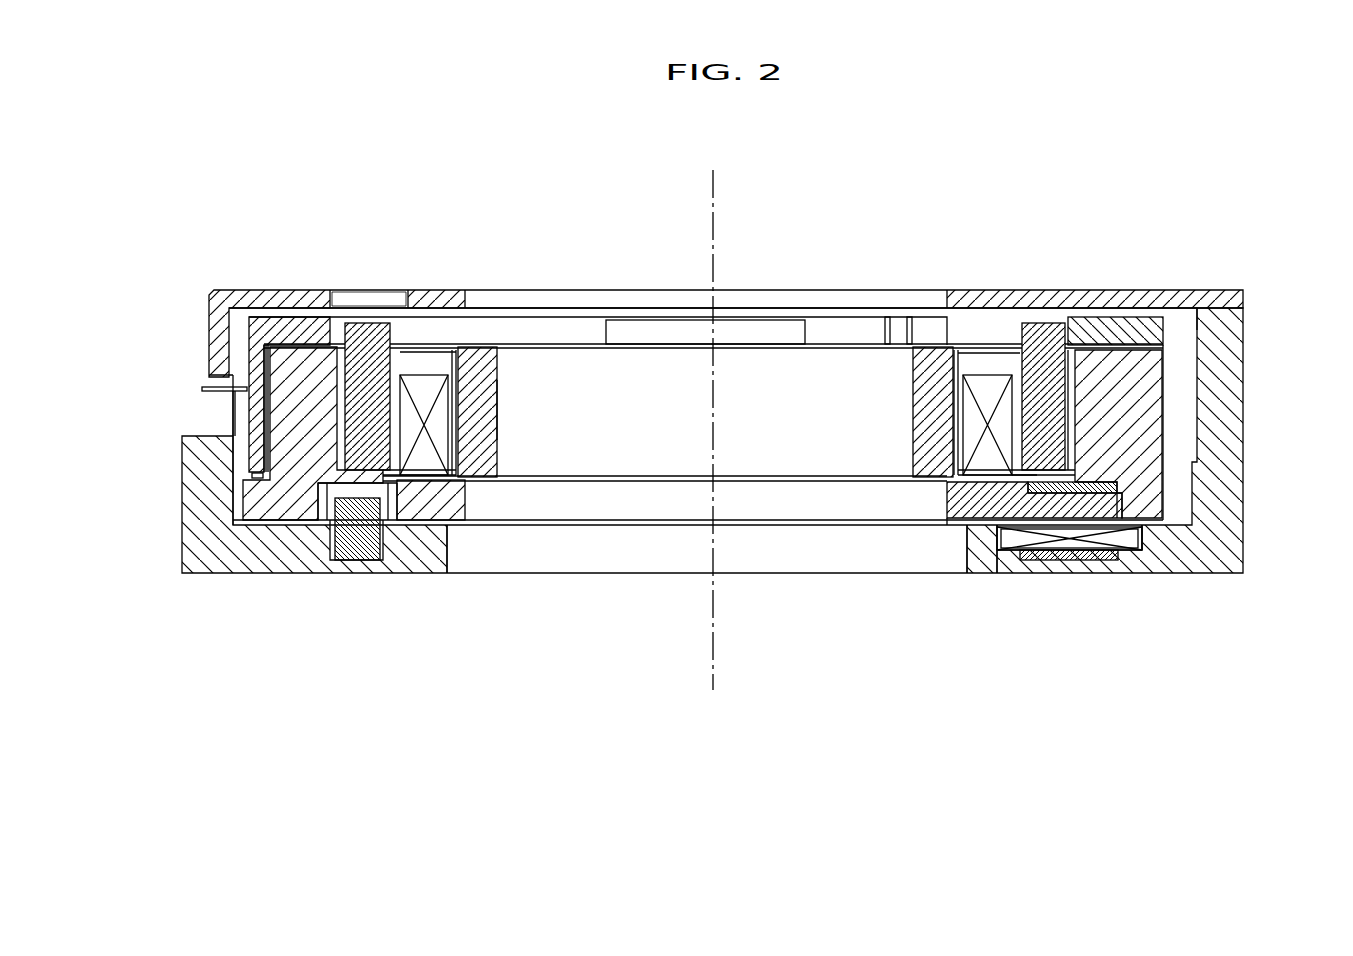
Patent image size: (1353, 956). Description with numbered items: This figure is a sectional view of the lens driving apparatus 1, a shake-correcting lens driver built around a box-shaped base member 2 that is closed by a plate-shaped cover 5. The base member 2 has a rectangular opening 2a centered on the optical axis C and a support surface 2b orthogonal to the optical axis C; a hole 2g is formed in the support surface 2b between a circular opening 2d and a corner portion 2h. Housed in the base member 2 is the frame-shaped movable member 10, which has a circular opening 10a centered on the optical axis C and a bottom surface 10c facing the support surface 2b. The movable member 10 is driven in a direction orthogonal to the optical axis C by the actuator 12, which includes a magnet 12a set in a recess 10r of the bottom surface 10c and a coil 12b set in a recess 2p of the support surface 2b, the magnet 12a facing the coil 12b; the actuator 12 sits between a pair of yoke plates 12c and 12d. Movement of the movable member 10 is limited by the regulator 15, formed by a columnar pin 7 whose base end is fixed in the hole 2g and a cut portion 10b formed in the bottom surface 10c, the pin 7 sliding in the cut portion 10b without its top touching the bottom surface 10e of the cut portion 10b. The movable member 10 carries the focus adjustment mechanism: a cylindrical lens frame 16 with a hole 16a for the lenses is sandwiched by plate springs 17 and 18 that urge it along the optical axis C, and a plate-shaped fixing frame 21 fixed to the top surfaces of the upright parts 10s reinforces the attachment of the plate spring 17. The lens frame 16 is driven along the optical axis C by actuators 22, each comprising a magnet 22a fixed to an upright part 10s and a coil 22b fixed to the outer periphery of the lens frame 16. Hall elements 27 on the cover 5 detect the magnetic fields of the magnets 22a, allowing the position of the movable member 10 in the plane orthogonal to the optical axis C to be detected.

The lens driving apparatus 1 is at (1106, 143).
The base member 2 is at (1233, 453).
The rectangular opening 2a is at (1200, 307).
The support surface 2b is at (440, 512).
The circular opening 2d is at (965, 548).
The hole 2g is at (380, 548).
The corner portion 2h is at (198, 434).
The recess 2p is at (1133, 543).
The cover 5 is at (245, 295).
The pin 7 is at (350, 542).
The movable member 10 is at (1147, 405).
The circular opening 10a is at (947, 503).
The cut portion 10b is at (327, 507).
The bottom surface 10c is at (957, 520).
The bottom surface of the cut portion 10e is at (390, 510).
The recess 10r is at (1113, 507).
The upright parts 10s is at (258, 382).
The actuator 12 is at (1044, 588).
The magnet 12a is at (1005, 510).
The coil 12b is at (1007, 552).
The yoke plate 12c is at (1117, 490).
The yoke plate 12d is at (1070, 560).
The regulator 15 is at (339, 591).
The lens frame 16 is at (480, 345).
The hole 16a is at (497, 407).
The plate spring 17 is at (845, 345).
The plate spring 18 is at (600, 482).
The fixing frame 21 is at (310, 332).
The actuator 22 is at (717, 332).
The magnet 22a is at (368, 333).
The coil 22b is at (423, 385).
The Hall element 27 is at (370, 300).
The optical axis C is at (713, 200).